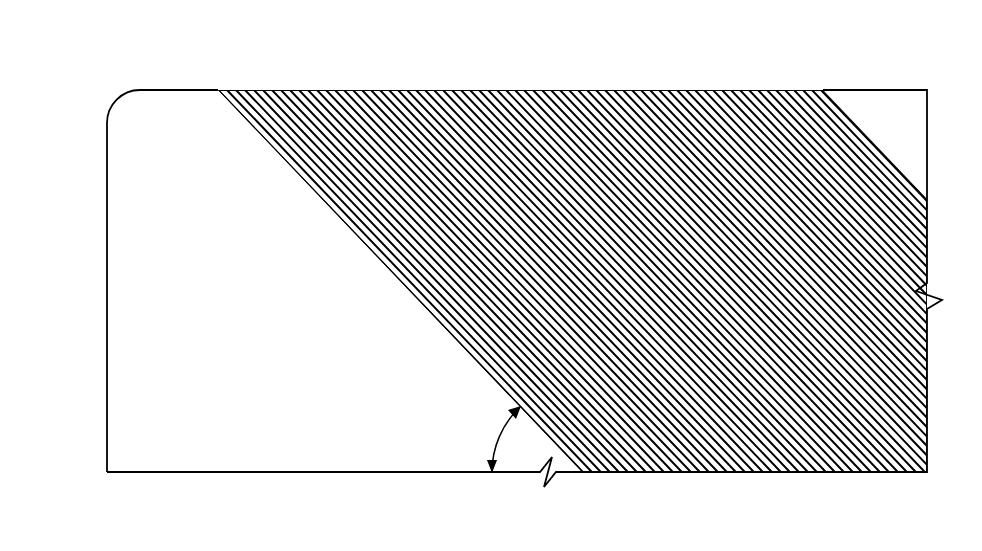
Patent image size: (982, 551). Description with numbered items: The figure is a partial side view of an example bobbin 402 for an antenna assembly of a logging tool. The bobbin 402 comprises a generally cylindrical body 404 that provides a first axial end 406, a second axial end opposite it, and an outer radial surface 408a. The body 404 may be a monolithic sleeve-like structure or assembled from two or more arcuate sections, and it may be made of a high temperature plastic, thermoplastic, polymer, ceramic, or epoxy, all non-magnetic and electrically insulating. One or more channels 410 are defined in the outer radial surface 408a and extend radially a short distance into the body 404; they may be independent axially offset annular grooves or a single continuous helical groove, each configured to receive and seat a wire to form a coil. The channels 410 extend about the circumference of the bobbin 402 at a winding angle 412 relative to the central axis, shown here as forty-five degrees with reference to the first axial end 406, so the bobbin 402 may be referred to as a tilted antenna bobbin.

The bobbin 402 is at (133, 39).
The body 404 is at (128, 351).
The first axial end 406 is at (107, 255).
The outer radial surface 408a is at (916, 90).
The channels 410 is at (351, 90).
The winding angle 412 is at (497, 440).